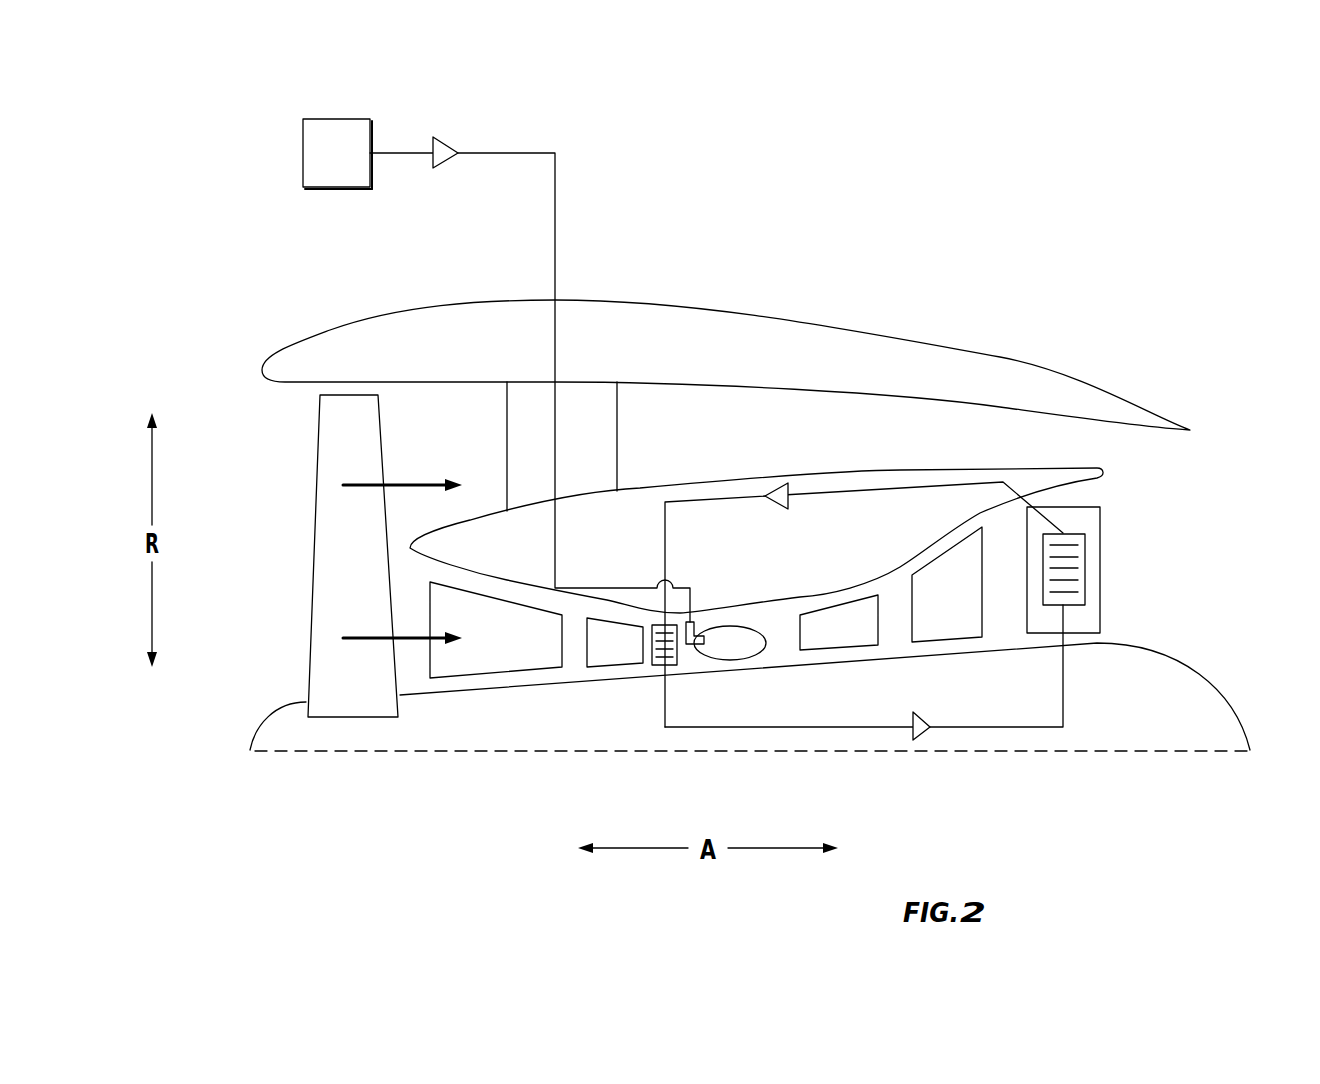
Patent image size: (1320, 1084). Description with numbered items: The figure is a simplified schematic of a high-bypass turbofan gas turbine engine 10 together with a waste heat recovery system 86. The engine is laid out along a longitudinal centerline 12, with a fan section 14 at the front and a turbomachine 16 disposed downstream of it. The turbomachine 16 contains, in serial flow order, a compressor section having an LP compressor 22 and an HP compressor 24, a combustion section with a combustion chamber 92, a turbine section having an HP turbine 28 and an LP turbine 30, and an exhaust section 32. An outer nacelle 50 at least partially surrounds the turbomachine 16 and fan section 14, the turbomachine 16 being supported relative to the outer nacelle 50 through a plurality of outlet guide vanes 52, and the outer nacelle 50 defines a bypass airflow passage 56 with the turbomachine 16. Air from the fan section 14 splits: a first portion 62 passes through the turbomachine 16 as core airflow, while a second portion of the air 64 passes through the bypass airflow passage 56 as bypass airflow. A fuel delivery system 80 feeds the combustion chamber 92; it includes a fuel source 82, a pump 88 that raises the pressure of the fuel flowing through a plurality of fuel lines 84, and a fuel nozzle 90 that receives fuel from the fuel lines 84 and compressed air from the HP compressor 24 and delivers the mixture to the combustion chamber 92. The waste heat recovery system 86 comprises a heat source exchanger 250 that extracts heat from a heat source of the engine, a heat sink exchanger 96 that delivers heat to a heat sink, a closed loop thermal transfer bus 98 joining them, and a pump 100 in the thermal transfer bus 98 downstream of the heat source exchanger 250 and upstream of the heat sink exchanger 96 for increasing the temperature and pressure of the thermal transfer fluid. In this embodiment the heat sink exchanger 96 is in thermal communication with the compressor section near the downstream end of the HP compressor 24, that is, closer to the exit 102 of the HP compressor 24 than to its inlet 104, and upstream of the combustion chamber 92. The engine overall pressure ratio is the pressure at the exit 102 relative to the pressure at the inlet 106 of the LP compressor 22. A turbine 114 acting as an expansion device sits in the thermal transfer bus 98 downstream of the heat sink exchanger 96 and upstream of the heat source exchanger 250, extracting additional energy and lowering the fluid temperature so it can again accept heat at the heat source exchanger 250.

The gas turbine engine 10 is at (876, 173).
The longitudinal centerline 12 is at (1148, 754).
The fan section 14 is at (272, 456).
The turbomachine 16 is at (692, 450).
The LP compressor 22 is at (480, 647).
The HP compressor 24 is at (617, 655).
The HP turbine 28 is at (842, 633).
The LP turbine 30 is at (936, 614).
The exhaust section 32 is at (1097, 613).
The outer nacelle 50 is at (652, 325).
The outlet guide vanes 52 is at (505, 432).
The bypass airflow passage 56 is at (740, 437).
The first portion of airflow 62 is at (373, 636).
The second portion of the air 64 is at (400, 482).
The fuel delivery system 80 is at (576, 127).
The fuel source 82 is at (323, 167).
The fuel lines 84 is at (556, 210).
The waste heat recovery system 86 is at (864, 480).
The pump 88 is at (450, 145).
The fuel nozzle 90 is at (695, 633).
The combustion chamber 92 is at (743, 625).
The heat sink exchanger 96 is at (655, 668).
The thermal transfer bus 98 is at (947, 486).
The pump 100 is at (777, 511).
The exit of the HP compressor 102 is at (657, 691).
The inlet to the HP compressor 104 is at (575, 657).
The inlet of the LP compressor 106 is at (420, 673).
The turbine 114 is at (922, 741).
The heat source exchanger 250 is at (1087, 560).